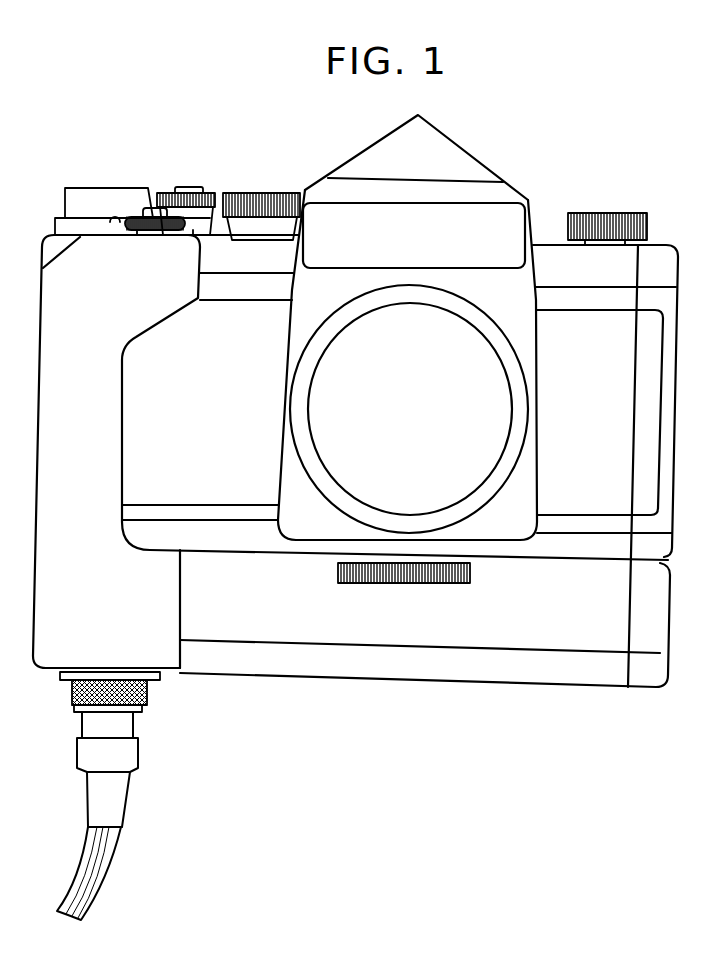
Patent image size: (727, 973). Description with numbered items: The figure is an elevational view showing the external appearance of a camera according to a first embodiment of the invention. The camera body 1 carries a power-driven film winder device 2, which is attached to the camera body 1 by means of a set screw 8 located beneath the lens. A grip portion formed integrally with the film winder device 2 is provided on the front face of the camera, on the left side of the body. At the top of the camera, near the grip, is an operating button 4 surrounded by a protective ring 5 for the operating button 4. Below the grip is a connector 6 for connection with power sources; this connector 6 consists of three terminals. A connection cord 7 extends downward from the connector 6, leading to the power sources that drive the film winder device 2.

The camera body 1 is at (250, 228).
The power-driven film winder device 2 is at (233, 632).
The operating button 4 is at (147, 210).
The protective ring 5 is at (114, 224).
The connector 6 is at (150, 692).
The connection cord 7 is at (88, 800).
The set screw 8 is at (393, 585).